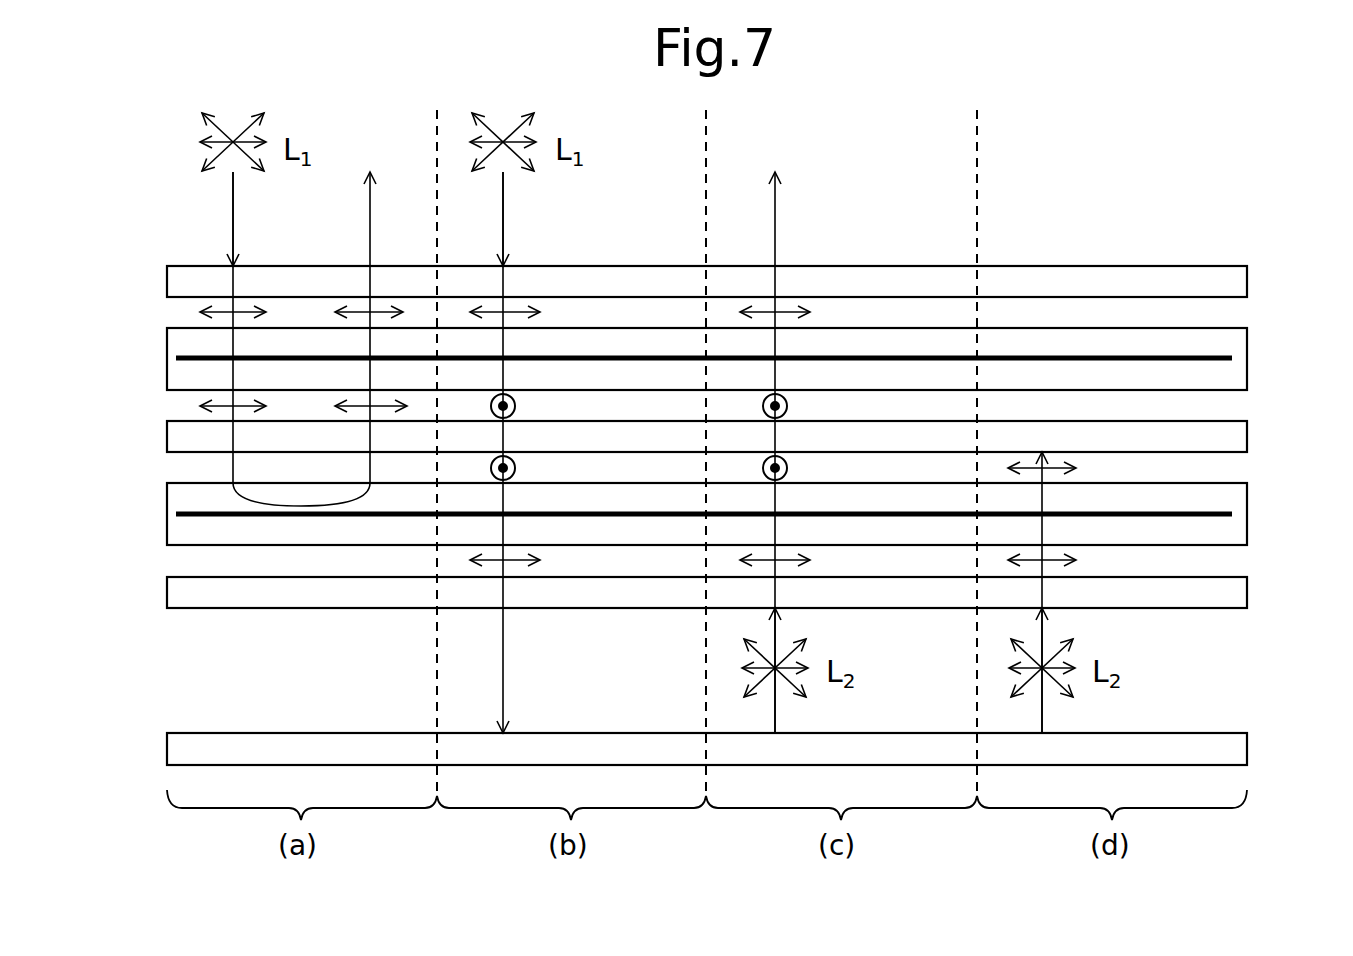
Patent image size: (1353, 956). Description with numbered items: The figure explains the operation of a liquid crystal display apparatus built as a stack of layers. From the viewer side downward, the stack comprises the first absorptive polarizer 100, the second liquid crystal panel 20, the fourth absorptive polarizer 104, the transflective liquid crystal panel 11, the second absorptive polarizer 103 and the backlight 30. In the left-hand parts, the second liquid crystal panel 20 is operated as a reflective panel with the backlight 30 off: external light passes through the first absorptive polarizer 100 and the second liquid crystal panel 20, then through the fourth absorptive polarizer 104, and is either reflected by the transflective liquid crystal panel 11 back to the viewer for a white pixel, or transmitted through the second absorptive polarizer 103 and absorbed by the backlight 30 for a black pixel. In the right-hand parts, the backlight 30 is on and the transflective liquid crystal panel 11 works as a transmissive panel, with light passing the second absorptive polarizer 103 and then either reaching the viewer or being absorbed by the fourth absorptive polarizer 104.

The first absorptive polarizer 100 is at (1247, 284).
The second liquid crystal panel 20 is at (1258, 328).
The fourth absorptive polarizer 104 is at (1247, 440).
The transflective liquid crystal panel 11 is at (1258, 483).
The second absorptive polarizer 103 is at (1247, 595).
The backlight 30 is at (1247, 750).